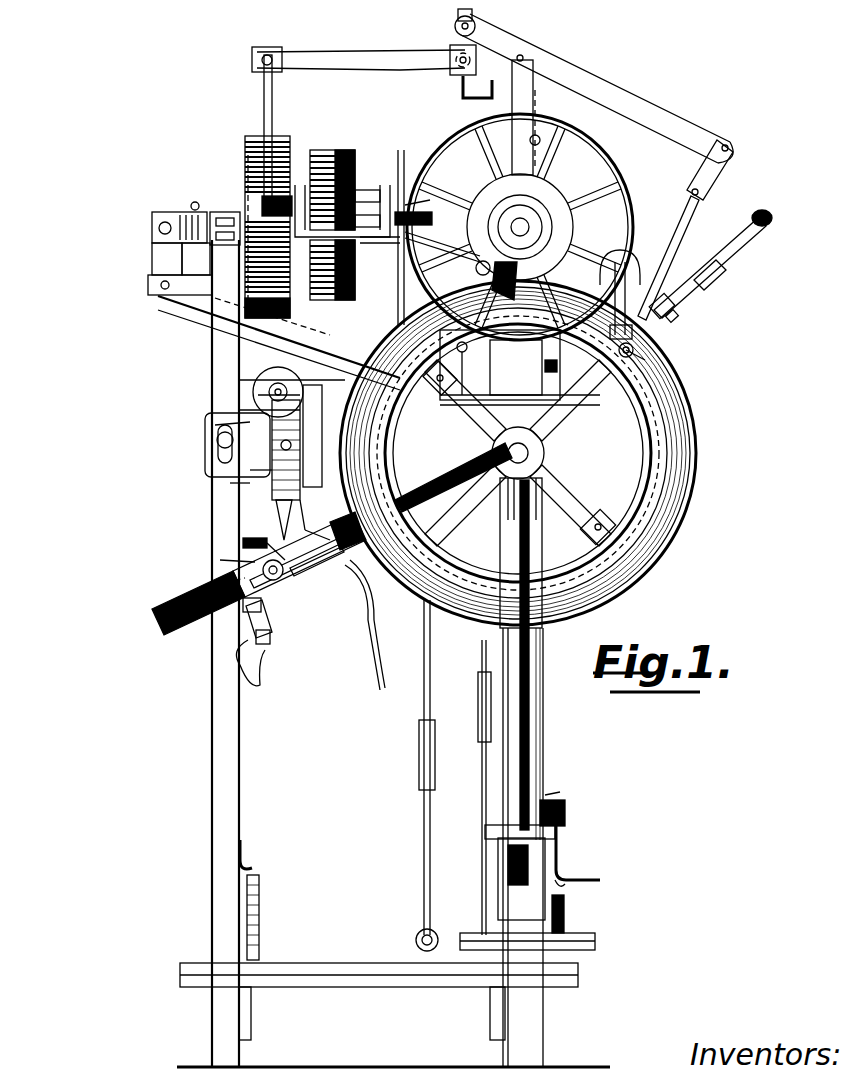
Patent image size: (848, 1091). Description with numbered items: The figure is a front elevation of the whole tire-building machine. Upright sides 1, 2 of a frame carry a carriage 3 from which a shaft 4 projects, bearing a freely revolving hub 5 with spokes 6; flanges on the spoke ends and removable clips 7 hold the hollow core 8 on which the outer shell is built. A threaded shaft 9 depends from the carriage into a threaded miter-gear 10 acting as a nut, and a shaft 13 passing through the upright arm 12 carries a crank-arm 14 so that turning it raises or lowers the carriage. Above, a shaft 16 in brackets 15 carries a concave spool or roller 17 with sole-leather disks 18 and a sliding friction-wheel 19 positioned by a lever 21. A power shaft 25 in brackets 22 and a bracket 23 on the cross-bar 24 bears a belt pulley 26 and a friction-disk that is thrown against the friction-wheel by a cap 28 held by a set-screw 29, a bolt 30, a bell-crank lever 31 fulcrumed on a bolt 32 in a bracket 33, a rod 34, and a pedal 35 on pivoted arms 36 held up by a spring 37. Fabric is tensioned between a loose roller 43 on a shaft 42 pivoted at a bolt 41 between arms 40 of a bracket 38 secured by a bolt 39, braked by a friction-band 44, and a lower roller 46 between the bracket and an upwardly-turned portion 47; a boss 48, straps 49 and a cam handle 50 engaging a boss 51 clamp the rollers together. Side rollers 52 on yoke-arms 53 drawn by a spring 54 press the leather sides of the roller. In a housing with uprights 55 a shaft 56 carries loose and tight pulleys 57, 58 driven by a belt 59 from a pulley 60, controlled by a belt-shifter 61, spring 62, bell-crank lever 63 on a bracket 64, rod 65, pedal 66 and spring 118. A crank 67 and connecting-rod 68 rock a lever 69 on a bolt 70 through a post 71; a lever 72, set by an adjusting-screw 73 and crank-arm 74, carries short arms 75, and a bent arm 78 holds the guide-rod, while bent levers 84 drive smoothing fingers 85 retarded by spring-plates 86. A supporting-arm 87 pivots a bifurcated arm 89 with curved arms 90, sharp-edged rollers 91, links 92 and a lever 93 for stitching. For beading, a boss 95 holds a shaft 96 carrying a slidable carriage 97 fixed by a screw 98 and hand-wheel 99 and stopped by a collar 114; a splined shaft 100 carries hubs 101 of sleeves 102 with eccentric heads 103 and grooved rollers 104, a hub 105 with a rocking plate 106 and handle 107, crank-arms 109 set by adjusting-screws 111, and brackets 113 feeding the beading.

The upright side of frame 1 is at (393, 653).
The upright side of frame 2 is at (545, 745).
The carriage 3 is at (542, 500).
The shaft 4 is at (530, 447).
The hub 5 is at (540, 455).
The spokes 6 is at (517, 453).
The clips 7 is at (604, 516).
The core 8 is at (648, 424).
The threaded rotatable shaft 9 is at (530, 713).
The threaded miter-gear 10 is at (498, 828).
The upright arm 12 is at (570, 800).
The clamp 13 is at (545, 795).
The crank-arm 14 is at (570, 846).
The brackets 15 is at (516, 367).
The shaft 16 is at (522, 227).
The spool or roller 17 is at (520, 227).
The disks of sole-leather 18 is at (552, 204).
The friction-wheel 19 is at (632, 210).
The lever 21 is at (540, 143).
The brackets 22 is at (225, 218).
The bracket 23 is at (396, 229).
The cross-bar 24 is at (520, 367).
The shaft 25 is at (245, 215).
The pulley 26 is at (280, 150).
The cap 28 is at (173, 217).
The set-screw 29 is at (185, 198).
The bolt 30 is at (160, 232).
The bell-crank lever 31 is at (181, 259).
The bolt 32 is at (264, 343).
The bracket 33 is at (148, 288).
The longitudinally-extensible rod 34 is at (424, 690).
The pedal 35 is at (379, 958).
The pivoted arms 36 is at (252, 1000).
The spring 37 is at (260, 918).
The bracket 38 is at (319, 436).
The bolt 39 is at (215, 445).
The upwardly-extending arms 40 is at (260, 385).
The bolt 41 is at (268, 390).
The shaft 42 is at (258, 395).
The loose roller 43 is at (258, 395).
The friction-band 44 is at (210, 425).
The roller 46 is at (250, 470).
The upwardly-turned portion 47 is at (270, 495).
The boss 48 is at (240, 410).
The straps 49 is at (260, 480).
The handle 50 is at (269, 520).
The boss 51 is at (272, 450).
The rollers 52 is at (520, 280).
The yoke-arms 53 is at (380, 255).
The spring 54 is at (448, 246).
The uprights 55 is at (300, 185).
The shaft 56 is at (362, 190).
The loose pulley 57 is at (320, 160).
The tight pulley 58 is at (350, 160).
The belt 59 is at (331, 282).
The pulley 60 is at (345, 282).
The belt-shifter 61 is at (432, 218).
The spring 62 is at (431, 194).
The bell-crank lever 63 is at (464, 270).
The bracket 64 is at (467, 350).
The longitudinally-extensible rod 65 is at (482, 655).
The pedal 66 is at (595, 942).
The crank 67 is at (245, 155).
The connecting-rod 68 is at (264, 107).
The lever 69 is at (345, 52).
The bolt 70 is at (530, 55).
The post 71 is at (508, 117).
The lever 72 is at (585, 100).
The adjusting-screw 73 is at (472, 15).
The crank-arm 74 is at (475, 93).
The short arms 75 is at (728, 168).
The bent arm 78 is at (612, 266).
The bent levers 84 is at (673, 258).
The smoothing fingers 85 is at (630, 300).
The spring-plates 86 is at (646, 298).
The supporting-arm 87 is at (634, 346).
The bifurcated arm 89 is at (678, 316).
The curved arms 90 is at (672, 302).
The sharp-edged rollers 91 is at (645, 360).
The links 92 is at (730, 262).
The lever 93 is at (770, 227).
The boss 95 is at (453, 474).
The shaft 96 is at (198, 613).
The slidable carriage 97 is at (207, 585).
The screw 98 is at (220, 562).
The hand-wheel 99 is at (243, 544).
The splined shaft 100 is at (300, 590).
The hubs 101 is at (305, 595).
The sleeve-like bearings 102 is at (295, 585).
The eccentric heads 103 is at (289, 544).
The rollers 104 is at (316, 514).
The hub 105 is at (312, 527).
The rocking plate 106 is at (270, 640).
The handle 107 is at (266, 663).
The crank-arms 109 is at (266, 620).
The adjusting-screws 111 is at (245, 612).
The brackets 113 is at (372, 580).
The collar 114 is at (357, 543).
The spring 118 is at (577, 906).